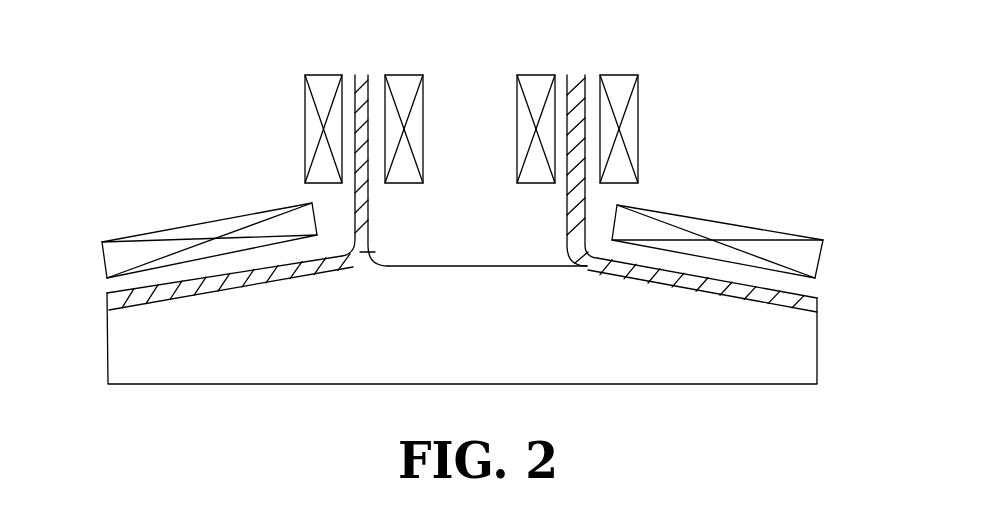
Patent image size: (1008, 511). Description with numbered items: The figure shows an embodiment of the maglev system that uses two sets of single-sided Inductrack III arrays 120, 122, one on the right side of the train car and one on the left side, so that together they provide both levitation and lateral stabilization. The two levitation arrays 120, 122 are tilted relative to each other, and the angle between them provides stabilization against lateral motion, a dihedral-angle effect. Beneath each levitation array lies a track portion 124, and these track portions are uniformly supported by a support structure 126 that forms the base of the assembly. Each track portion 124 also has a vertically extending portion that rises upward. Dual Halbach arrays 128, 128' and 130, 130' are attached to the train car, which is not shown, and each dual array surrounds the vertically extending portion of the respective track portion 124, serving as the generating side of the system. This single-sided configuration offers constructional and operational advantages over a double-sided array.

The single-sided Inductrack III array 120 is at (703, 223).
The single-sided Inductrack III array 122 is at (203, 223).
The track portion 124 is at (110, 293).
The support structure 126 is at (505, 343).
The Halbach array 128 is at (549, 94).
The Halbach array 128' is at (667, 111).
The Halbach array 130 is at (415, 94).
The Halbach array 130' is at (275, 124).